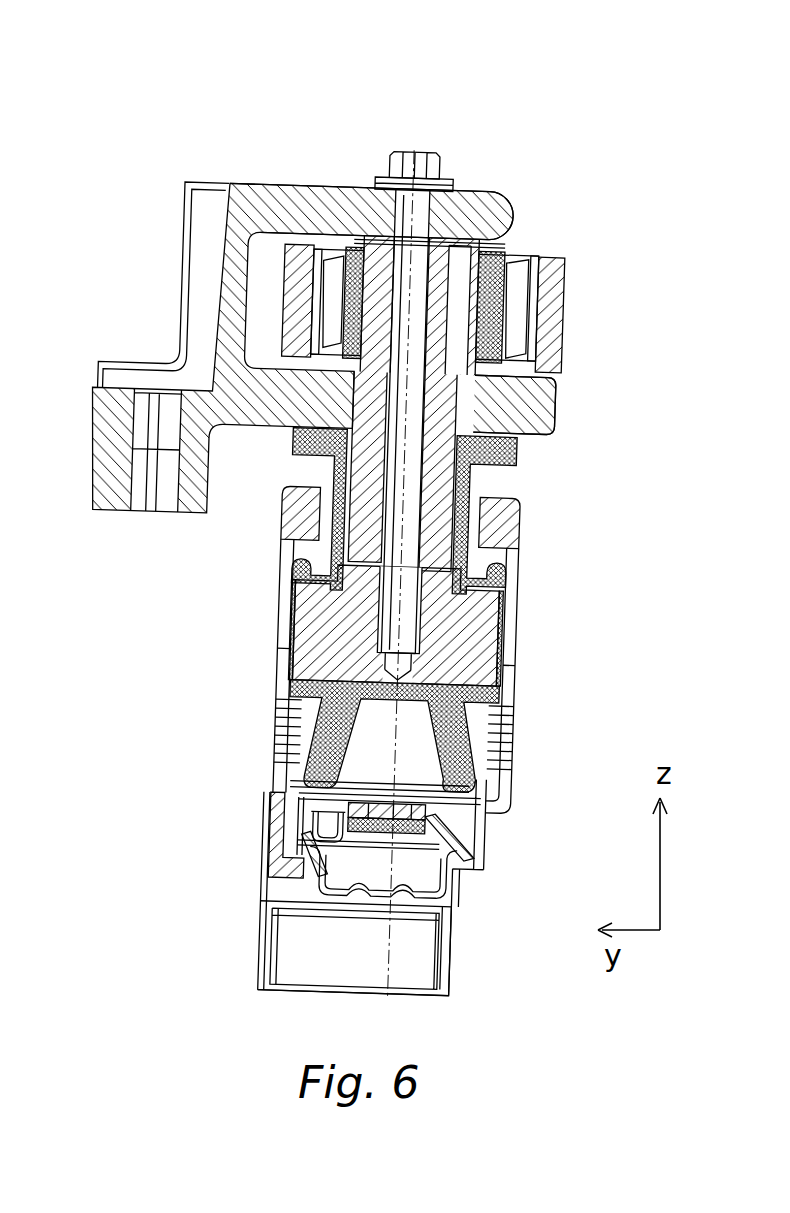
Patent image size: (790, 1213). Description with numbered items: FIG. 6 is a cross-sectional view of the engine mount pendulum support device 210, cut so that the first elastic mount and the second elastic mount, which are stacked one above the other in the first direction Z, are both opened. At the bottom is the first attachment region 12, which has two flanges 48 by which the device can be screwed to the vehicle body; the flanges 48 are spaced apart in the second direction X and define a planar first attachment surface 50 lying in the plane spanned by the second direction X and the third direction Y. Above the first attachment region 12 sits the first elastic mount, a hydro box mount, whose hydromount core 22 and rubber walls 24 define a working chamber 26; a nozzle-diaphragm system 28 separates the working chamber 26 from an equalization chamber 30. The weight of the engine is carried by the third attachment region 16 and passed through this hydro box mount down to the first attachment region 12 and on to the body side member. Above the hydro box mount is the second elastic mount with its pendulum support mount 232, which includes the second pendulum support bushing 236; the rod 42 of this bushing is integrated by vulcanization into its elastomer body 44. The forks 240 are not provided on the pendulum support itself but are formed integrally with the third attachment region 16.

The fan mounting arrangement 210 is at (371, 534).
The rod 42 is at (424, 208).
The fork 240 is at (478, 206).
The pendulum support mount 232 is at (466, 358).
The second pendulum support bushing 236 is at (553, 323).
The elastomer body 44 is at (506, 367).
The third attachment region 16 is at (134, 300).
The hydromount core 22 is at (474, 636).
The rubber walls 24 is at (516, 742).
The working chamber 26 is at (472, 762).
The nozzle-diaphragm system 28 is at (443, 831).
The equalization chamber 30 is at (418, 880).
The first attachment region 12 is at (334, 920).
The flanges 48 is at (287, 958).
The first attachment surface 50 is at (299, 989).